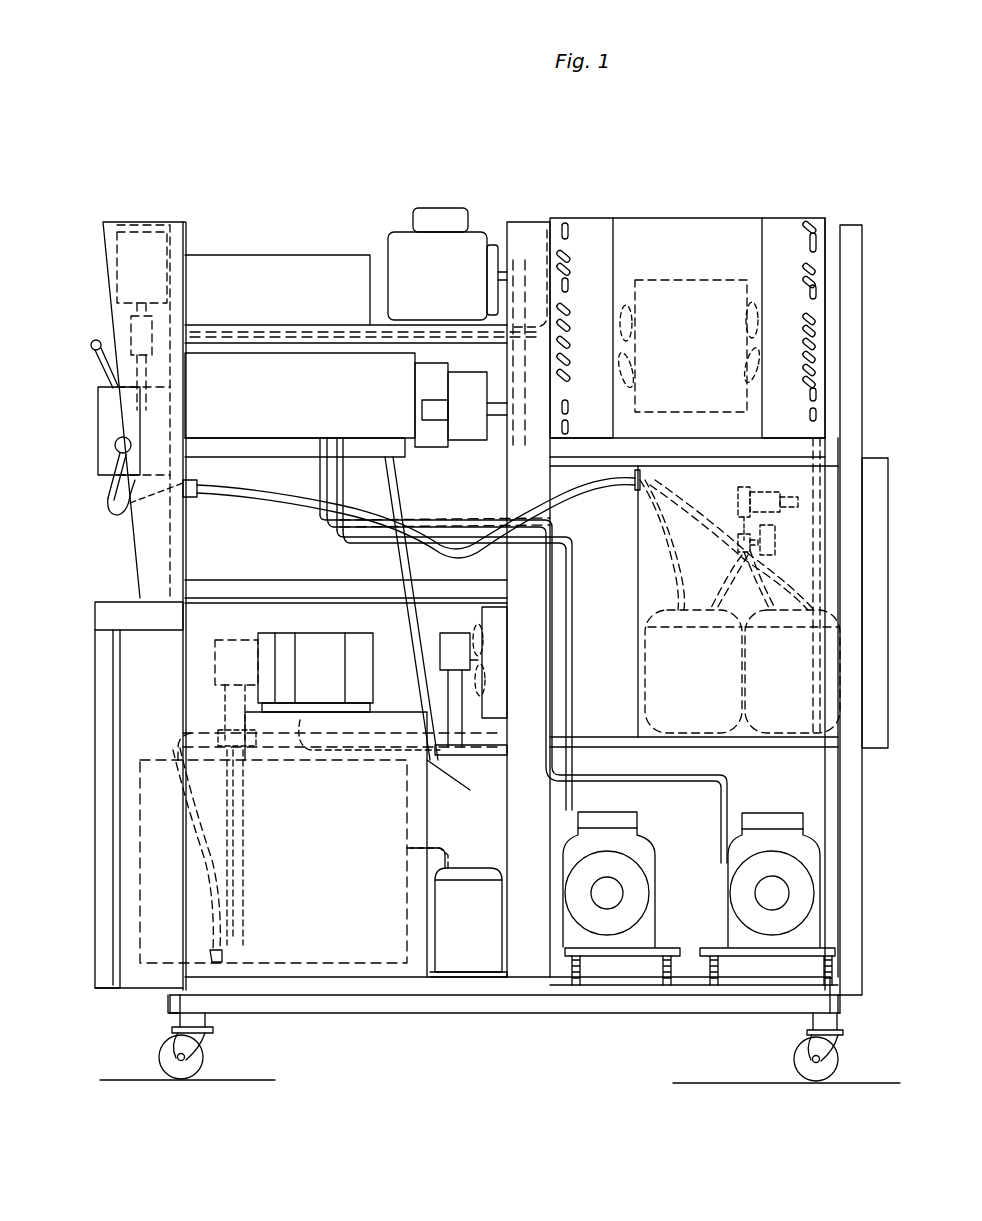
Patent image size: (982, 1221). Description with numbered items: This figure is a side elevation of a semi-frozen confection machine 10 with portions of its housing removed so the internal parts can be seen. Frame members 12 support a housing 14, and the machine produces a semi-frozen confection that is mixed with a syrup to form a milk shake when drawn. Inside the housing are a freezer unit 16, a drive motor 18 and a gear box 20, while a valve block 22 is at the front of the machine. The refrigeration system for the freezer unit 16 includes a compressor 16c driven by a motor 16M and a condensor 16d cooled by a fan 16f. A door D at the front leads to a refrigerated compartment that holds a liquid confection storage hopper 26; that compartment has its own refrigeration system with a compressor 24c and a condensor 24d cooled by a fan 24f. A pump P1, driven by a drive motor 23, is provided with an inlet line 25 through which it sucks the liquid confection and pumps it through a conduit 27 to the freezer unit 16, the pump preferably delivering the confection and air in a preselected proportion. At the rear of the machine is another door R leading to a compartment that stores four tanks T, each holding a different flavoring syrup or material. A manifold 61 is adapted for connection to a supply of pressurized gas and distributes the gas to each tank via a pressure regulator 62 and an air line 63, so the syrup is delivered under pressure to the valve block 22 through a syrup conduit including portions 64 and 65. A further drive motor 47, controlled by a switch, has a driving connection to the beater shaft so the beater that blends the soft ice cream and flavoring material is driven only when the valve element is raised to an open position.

The semi-frozen confection machine 10 is at (290, 182).
The frame members 12 is at (458, 1005).
The housing 14 is at (95, 615).
The freezer unit 16 is at (304, 398).
The compressor 16c is at (690, 829).
The condensor 16d is at (563, 230).
The fan 16f is at (620, 295).
The motor 16M is at (623, 893).
The drive motor 18 is at (395, 232).
The gear box 20 is at (455, 440).
The valve block 22 is at (98, 440).
The drive motor 23 is at (330, 668).
The compressor 24c is at (485, 918).
The condensor 24d is at (548, 698).
The fan 24f is at (470, 630).
The inlet line 25 is at (196, 890).
The liquid confection storage hopper 26 is at (405, 900).
The conduit 27 is at (392, 570).
The drive motor 47 is at (118, 270).
The manifold 61 is at (768, 487).
The pressure regulator 62 is at (778, 555).
The air line 63 is at (715, 592).
The syrup conduit portion 64 is at (270, 495).
The syrup conduit portion 65 is at (180, 490).
The door D is at (100, 858).
The pump P1 is at (215, 712).
The door R is at (878, 612).
The tanks T is at (645, 667).